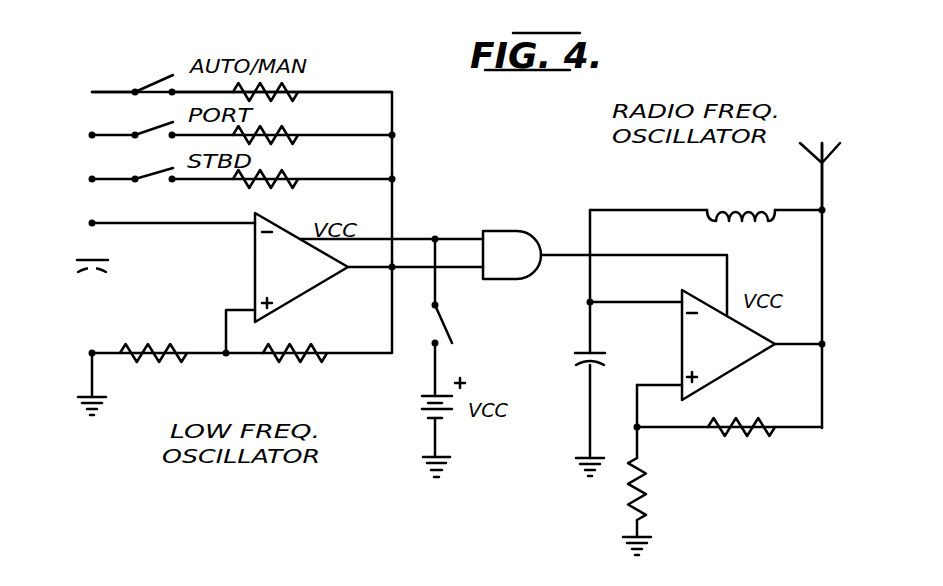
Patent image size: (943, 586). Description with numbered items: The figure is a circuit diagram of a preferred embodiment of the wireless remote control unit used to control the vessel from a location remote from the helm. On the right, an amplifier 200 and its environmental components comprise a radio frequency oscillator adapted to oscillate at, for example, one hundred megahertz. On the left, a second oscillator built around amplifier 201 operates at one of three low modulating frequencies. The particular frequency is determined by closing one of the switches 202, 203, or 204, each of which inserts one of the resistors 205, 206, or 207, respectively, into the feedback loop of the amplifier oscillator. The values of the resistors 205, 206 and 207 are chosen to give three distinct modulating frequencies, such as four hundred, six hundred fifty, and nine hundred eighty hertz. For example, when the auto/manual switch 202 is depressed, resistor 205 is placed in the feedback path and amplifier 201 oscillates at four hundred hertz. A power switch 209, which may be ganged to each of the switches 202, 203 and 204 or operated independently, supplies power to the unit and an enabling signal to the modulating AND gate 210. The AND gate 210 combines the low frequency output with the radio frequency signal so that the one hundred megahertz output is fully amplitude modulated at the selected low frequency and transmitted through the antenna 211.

The amplifier 200 is at (722, 376).
The amplifier 201 is at (302, 295).
The auto/manual switch 202 is at (150, 83).
The switch 203 is at (152, 123).
The switch 204 is at (152, 182).
The resistor 205 is at (289, 96).
The resistor 206 is at (283, 139).
The resistor 207 is at (270, 183).
The power switch 209 is at (452, 325).
The modulating AND gate 210 is at (522, 203).
The antenna 211 is at (833, 153).